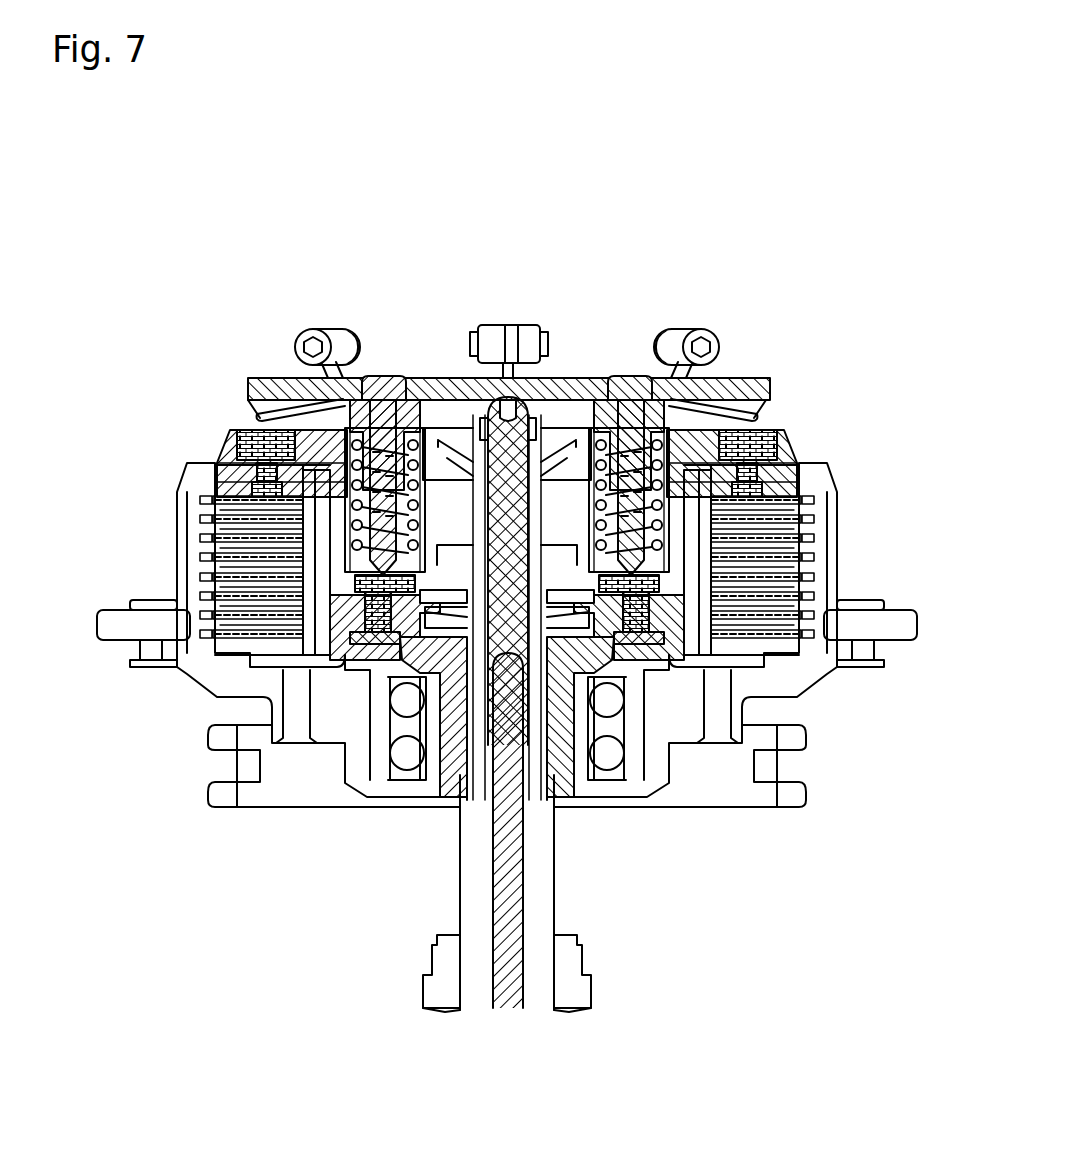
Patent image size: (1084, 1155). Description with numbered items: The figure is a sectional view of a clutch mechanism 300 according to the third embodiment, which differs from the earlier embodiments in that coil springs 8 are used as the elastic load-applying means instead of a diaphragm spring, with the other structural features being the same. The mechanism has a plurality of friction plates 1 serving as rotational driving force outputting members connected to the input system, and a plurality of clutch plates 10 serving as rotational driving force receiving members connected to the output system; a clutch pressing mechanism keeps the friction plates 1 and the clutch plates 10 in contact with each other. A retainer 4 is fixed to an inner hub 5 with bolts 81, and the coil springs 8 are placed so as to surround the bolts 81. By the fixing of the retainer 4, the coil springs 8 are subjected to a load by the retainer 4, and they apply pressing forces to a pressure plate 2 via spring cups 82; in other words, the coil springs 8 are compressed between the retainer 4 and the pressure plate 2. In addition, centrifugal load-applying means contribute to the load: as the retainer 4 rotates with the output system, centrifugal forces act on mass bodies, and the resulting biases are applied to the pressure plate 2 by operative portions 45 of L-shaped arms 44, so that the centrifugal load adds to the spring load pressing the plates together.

The clutch mechanism 300 is at (524, 575).
The friction plates 1 is at (807, 500).
The clutch plates 10 is at (810, 520).
The pressure plate 2 is at (785, 455).
The retainer 4 is at (745, 386).
The L-shaped arms 44 is at (318, 368).
The operative portions 45 is at (250, 395).
The inner hub 5 is at (567, 667).
The coil springs 8 is at (588, 430).
The bolts 81 is at (640, 375).
The spring cups 82 is at (784, 434).